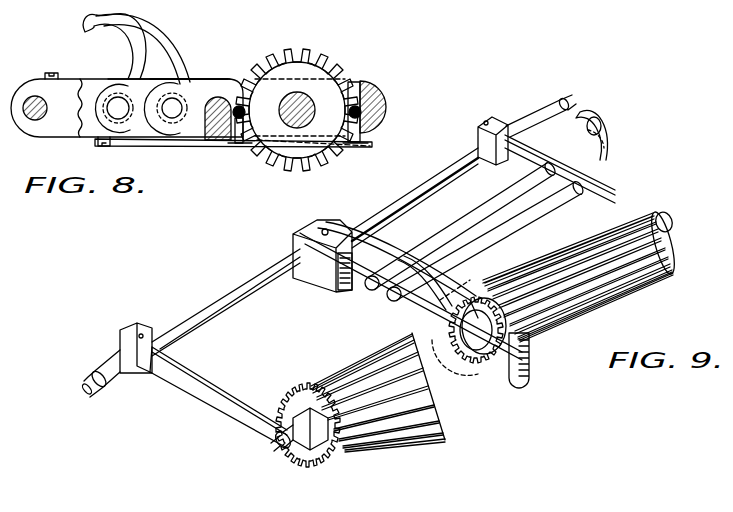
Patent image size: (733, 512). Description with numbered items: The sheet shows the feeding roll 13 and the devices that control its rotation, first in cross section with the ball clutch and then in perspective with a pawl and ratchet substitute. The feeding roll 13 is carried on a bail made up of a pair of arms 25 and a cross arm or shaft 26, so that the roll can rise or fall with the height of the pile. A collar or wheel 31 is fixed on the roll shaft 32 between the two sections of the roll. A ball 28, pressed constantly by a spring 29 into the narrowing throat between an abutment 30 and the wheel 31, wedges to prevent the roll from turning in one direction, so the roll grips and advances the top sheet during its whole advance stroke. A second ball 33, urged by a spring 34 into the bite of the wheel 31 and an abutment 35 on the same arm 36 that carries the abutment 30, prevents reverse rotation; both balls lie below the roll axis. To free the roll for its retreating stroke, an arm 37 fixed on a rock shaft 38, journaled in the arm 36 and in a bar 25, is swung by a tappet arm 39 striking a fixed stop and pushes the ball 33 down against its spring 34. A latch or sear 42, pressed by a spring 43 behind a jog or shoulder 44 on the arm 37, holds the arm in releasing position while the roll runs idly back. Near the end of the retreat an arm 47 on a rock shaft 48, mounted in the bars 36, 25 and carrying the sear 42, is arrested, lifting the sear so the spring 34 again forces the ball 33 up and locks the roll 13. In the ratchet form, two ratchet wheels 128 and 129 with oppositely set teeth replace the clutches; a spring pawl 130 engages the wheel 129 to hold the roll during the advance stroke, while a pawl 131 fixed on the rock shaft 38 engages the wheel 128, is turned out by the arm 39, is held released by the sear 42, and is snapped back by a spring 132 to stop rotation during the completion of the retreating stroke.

In FIG. 8, the feeding roll 13 is at (310, 52).
In FIG. 9, the feeding roll 13 is at (370, 445).
In FIG. 9, the arms 25 is at (265, 392).
In FIG. 8, the cross arm or shaft 26 is at (43, 113).
In FIG. 9, the cross arm or shaft 26 is at (215, 305).
In FIG. 8, the ball 28 is at (357, 105).
In FIG. 8, the spring 29 is at (362, 147).
In FIG. 8, the abutment 30 is at (388, 110).
In FIG. 8, the collar or wheel 31 is at (308, 110).
In FIG. 8, the roll shaft 32 is at (284, 111).
In FIG. 9, the roll shaft 32 is at (446, 372).
In FIG. 8, the ball 33 is at (243, 108).
In FIG. 8, the spring 34 is at (212, 147).
In FIG. 8, the abutment 35 is at (220, 100).
In FIG. 8, the arm 36 is at (127, 109).
In FIG. 9, the arm 36 is at (366, 250).
In FIG. 8, the arm 37 is at (194, 79).
In FIG. 8, the rock shaft 38 is at (168, 112).
In FIG. 9, the rock shaft 38 is at (502, 257).
In FIG. 8, the tappet arm 39 is at (172, 78).
In FIG. 9, the tappet arm 39 is at (605, 150).
In FIG. 8, the latch or sear 42 is at (116, 97).
In FIG. 9, the latch or sear 42 is at (360, 282).
In FIG. 8, the spring 43 is at (125, 78).
In FIG. 9, the spring 43 is at (386, 260).
In FIG. 8, the jog or shoulder 44 is at (174, 108).
In FIG. 9, the jog or shoulder 44 is at (420, 281).
In FIG. 8, the arm 47 is at (108, 38).
In FIG. 9, the arm 47 is at (598, 118).
In FIG. 8, the rock shaft 48 is at (116, 113).
In FIG. 9, the rock shaft 48 is at (441, 232).
In FIG. 9, the ratchet wheel 128 is at (498, 384).
In FIG. 9, the ratchet wheel 129 is at (444, 372).
In FIG. 9, the spring pawl 130 is at (440, 294).
In FIG. 9, the pawl 131 is at (399, 294).
In FIG. 9, the spring 132 is at (374, 291).